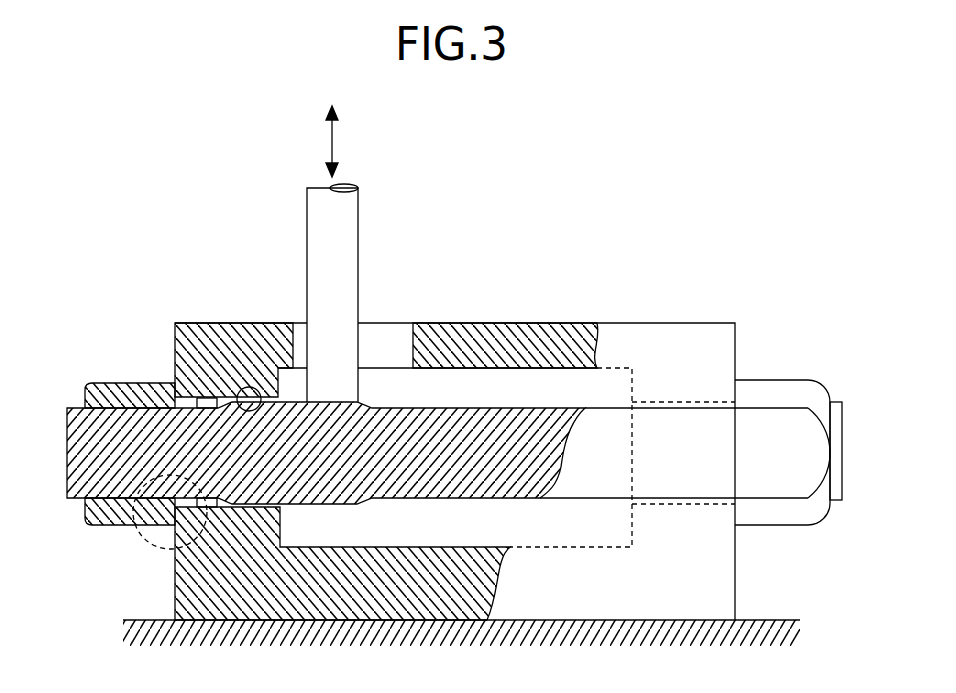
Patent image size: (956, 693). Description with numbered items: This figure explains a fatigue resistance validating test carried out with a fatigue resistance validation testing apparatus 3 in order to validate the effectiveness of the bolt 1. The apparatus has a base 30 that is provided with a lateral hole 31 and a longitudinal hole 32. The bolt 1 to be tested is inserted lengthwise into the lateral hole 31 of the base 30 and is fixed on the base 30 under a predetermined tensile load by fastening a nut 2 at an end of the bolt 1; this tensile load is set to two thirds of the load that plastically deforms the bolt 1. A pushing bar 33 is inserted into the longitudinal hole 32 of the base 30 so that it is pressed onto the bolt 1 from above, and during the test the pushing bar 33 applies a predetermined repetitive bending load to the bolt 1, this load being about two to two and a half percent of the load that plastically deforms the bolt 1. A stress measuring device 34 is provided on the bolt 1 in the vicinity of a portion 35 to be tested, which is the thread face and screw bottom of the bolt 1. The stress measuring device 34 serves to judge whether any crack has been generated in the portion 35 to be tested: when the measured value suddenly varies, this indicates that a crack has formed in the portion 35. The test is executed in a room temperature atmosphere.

The bolt 1 is at (64, 418).
The nut 2 is at (100, 525).
The fatigue resistance validation testing apparatus 3 is at (536, 306).
The base 30 is at (632, 322).
The lateral hole 31 is at (237, 392).
The longitudinal hole 32 is at (399, 322).
The pushing bar 33 is at (358, 226).
The stress measuring device 34 is at (203, 500).
The portion to be tested 35 is at (172, 548).